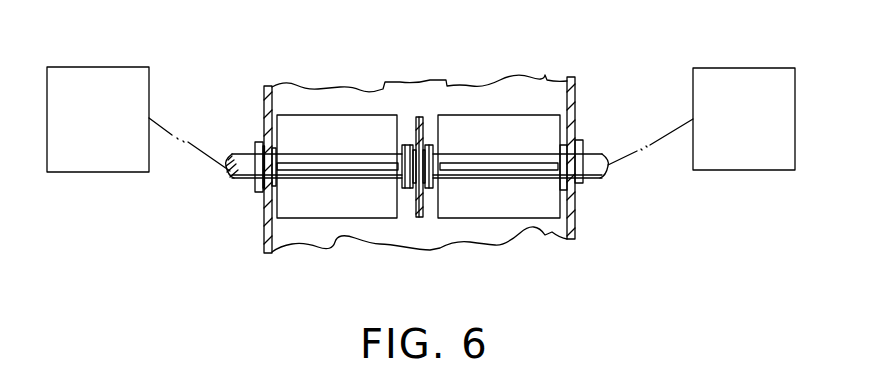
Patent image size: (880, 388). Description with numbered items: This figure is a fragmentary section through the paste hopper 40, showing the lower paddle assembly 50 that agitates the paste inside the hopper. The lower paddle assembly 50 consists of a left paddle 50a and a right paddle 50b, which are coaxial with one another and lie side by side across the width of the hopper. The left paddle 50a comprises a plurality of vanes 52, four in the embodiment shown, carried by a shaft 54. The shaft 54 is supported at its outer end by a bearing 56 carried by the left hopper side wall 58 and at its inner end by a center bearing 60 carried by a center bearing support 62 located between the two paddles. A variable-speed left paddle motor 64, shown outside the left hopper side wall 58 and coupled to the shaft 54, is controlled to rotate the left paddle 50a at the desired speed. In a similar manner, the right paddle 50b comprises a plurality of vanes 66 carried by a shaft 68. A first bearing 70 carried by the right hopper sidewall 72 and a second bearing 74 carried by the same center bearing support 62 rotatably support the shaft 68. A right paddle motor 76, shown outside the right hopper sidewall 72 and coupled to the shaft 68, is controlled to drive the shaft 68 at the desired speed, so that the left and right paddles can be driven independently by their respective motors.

The paste hopper 40 is at (404, 82).
The lower paddle assembly 50 is at (418, 138).
The left paddle 50a is at (330, 115).
The right paddle 50b is at (480, 115).
The vanes 52 is at (340, 186).
The shaft 54 is at (390, 179).
The bearing 56 is at (250, 190).
The left hopper side wall 58 is at (263, 99).
The center bearing 60 is at (410, 192).
The center bearing support 62 is at (425, 200).
The left paddle motor 64 is at (125, 172).
The vanes 66 is at (530, 193).
The shaft 68 is at (463, 178).
The first bearing 70 is at (583, 185).
The right hopper sidewall 72 is at (580, 226).
The second bearing 74 is at (424, 140).
The right paddle motor 76 is at (718, 172).